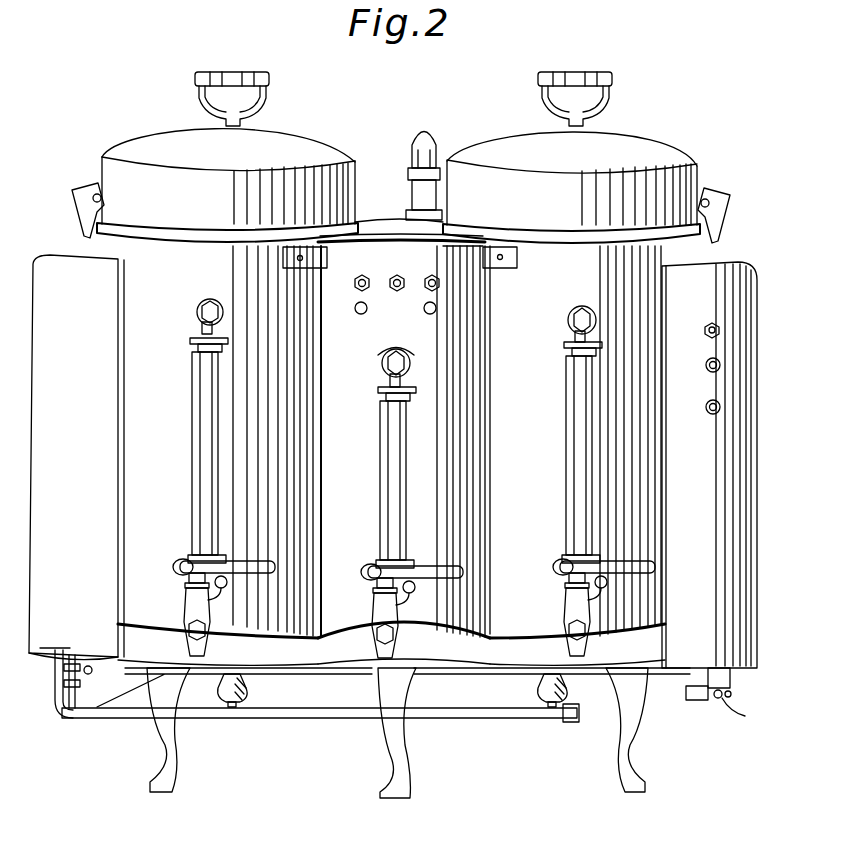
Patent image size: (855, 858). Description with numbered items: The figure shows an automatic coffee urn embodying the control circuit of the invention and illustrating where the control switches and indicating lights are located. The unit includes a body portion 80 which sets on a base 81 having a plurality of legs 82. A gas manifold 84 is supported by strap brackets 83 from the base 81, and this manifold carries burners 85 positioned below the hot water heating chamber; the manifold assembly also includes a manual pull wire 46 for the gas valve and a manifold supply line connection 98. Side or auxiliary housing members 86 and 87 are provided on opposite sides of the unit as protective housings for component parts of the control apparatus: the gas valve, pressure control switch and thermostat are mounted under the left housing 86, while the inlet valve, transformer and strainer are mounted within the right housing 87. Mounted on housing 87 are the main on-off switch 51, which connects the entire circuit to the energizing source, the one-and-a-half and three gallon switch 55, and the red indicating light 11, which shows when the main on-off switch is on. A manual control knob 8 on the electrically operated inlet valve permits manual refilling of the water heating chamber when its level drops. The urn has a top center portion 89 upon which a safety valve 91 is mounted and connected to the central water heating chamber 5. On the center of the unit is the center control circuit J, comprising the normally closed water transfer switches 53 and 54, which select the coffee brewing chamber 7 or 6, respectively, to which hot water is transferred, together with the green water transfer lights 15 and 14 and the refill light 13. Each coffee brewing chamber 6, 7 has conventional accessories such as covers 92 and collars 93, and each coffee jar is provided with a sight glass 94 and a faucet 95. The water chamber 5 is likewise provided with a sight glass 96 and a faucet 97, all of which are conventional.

The central water heating chamber 5 is at (534, 529).
The coffee brewing chamber 6 is at (197, 286).
The coffee brewing chamber 7 is at (548, 252).
The manual control knob 8 is at (718, 699).
The light L1 11 is at (706, 327).
The refill light L3 13 is at (426, 291).
The water transfer light L4 14 is at (357, 287).
The water transfer light L5 15 is at (394, 291).
The manual pull wire 46 is at (92, 672).
The on-off switch S1 51 is at (706, 362).
The switch S3 53 is at (427, 314).
The switch S4 54 is at (356, 312).
The 1½ and 3 gallon switch S5 55 is at (706, 404).
The center control circuit J is at (366, 371).
The body portion 80 is at (363, 463).
The base 81 is at (378, 686).
The legs 82 is at (410, 740).
The strap brackets 83 is at (410, 683).
The gas manifold 84 is at (305, 712).
The burners 85 is at (248, 680).
The side housing member 86 is at (92, 523).
The side housing member 87 is at (708, 551).
The top center portion 89 is at (405, 273).
The safety valve 91 is at (437, 145).
The covers 92 is at (225, 216).
The collars 93 is at (160, 243).
The sight glass 94 is at (198, 487).
The faucet 95 is at (188, 624).
The sight glass 96 is at (386, 493).
The faucet 97 is at (380, 627).
The manifold supply line connection 98 is at (132, 706).